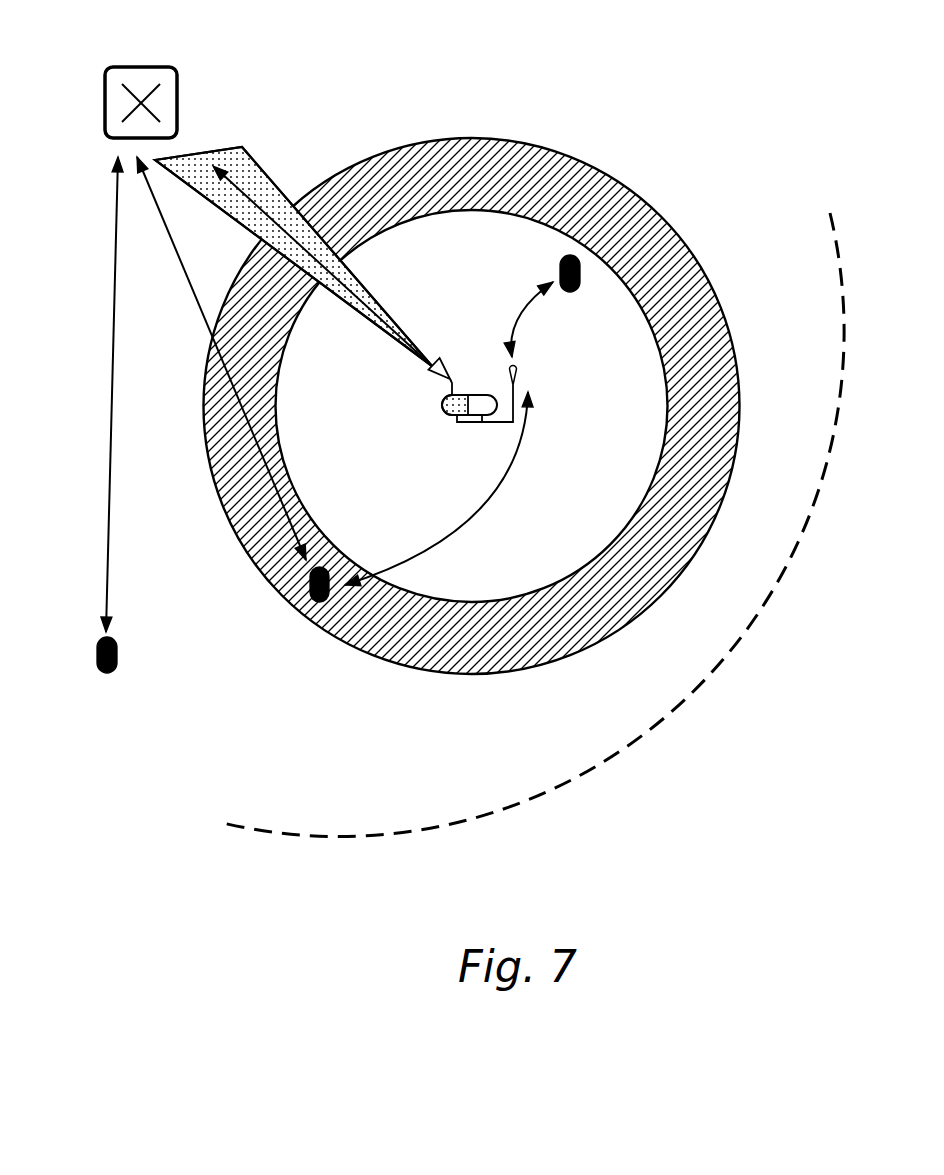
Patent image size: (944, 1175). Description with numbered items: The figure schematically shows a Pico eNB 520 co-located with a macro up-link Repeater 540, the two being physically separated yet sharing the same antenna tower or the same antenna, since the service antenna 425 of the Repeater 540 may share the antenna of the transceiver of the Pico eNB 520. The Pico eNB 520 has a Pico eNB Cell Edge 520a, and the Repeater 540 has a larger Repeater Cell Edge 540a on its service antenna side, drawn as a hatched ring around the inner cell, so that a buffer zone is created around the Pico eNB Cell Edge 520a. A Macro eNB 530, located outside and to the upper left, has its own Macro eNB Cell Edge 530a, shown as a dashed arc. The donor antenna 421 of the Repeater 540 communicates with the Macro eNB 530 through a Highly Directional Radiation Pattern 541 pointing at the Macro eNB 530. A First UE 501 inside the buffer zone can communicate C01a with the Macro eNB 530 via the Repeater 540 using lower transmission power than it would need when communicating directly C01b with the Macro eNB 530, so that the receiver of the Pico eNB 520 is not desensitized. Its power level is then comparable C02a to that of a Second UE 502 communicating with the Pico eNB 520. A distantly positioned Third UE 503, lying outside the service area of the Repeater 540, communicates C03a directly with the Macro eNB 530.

The Macro eNB 530 is at (167, 65).
The Macro eNB Cell Edge 530a is at (823, 283).
The Highly Directional Radiation Pattern 541 is at (275, 183).
The Repeater 540 is at (450, 417).
The Repeater Cell Edge 540a is at (642, 192).
The Pico eNB 520 is at (482, 394).
The Pico eNB Cell Edge 520a is at (650, 470).
The donor antenna 421 is at (431, 383).
The service antenna 425 is at (520, 365).
The First UE 501 is at (306, 597).
The Second UE 502 is at (553, 270).
The Third UE 503 is at (95, 652).
The communication via Repeater C01a is at (442, 527).
The direct communication C01b is at (203, 320).
The comparable power level communication C02a is at (523, 308).
The direct communication C03a is at (110, 482).